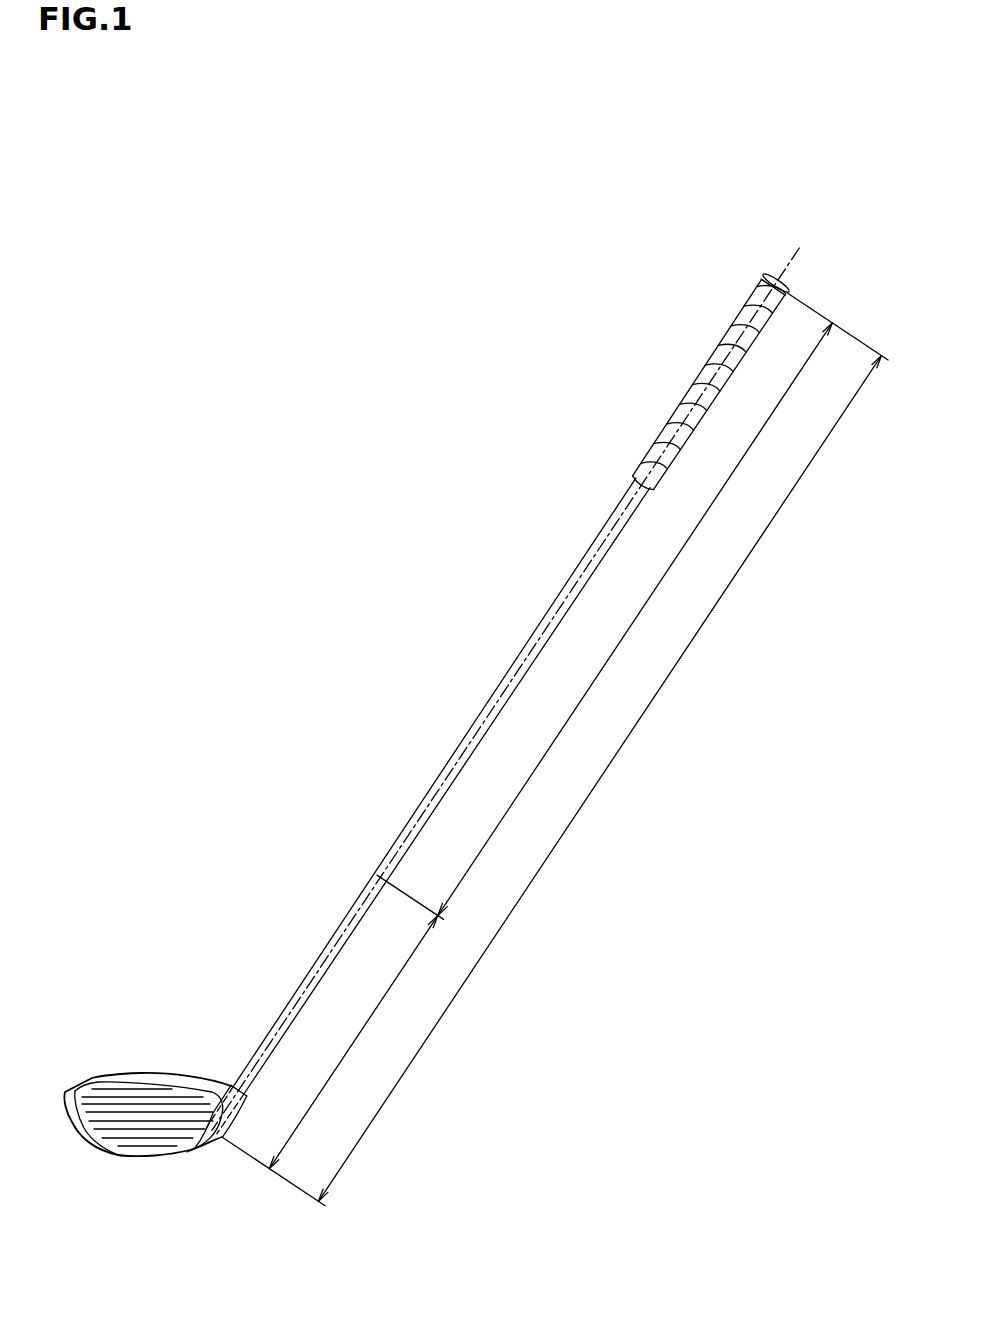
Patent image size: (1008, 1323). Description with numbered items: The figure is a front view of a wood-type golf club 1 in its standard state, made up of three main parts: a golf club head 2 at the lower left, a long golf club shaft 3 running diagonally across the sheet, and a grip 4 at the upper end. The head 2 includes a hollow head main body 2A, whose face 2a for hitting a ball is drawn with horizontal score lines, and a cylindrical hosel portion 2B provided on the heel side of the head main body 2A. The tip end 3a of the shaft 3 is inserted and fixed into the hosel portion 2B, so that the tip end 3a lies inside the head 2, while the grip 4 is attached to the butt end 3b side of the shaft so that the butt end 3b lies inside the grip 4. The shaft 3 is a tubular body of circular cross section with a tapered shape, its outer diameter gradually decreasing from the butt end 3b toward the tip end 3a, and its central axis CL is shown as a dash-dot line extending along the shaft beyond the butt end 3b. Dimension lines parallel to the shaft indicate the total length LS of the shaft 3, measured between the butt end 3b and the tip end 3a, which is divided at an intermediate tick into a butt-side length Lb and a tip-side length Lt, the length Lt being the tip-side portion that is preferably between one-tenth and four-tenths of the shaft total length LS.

The golf club 1 is at (365, 558).
The golf club head 2 is at (155, 1076).
The head main body 2A is at (132, 1067).
The hosel portion 2B is at (233, 1085).
The face 2a is at (118, 1120).
The golf club shaft 3 is at (527, 713).
The tip end 3a is at (210, 1133).
The butt end 3b is at (769, 274).
The grip 4 is at (710, 335).
The central axis CL is at (790, 264).
The length from butt end to balance point Lb is at (635, 619).
The length of tip-side bias layer Lt is at (353, 1042).
The total length of shaft LS is at (600, 779).